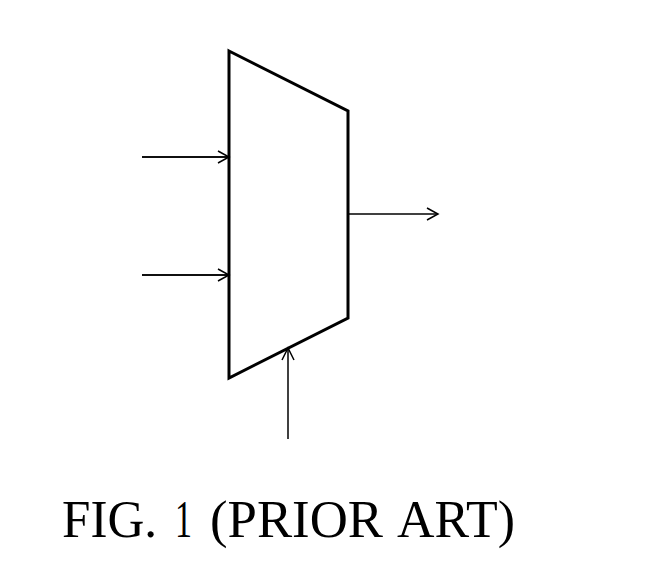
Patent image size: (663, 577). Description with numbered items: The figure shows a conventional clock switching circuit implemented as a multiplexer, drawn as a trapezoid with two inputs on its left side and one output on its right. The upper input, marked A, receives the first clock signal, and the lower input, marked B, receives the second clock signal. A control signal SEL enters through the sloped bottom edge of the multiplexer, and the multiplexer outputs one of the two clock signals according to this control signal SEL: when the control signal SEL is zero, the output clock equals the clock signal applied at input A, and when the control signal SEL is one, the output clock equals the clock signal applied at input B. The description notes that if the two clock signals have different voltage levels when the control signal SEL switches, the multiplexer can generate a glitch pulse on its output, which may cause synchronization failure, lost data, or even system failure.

The multiplexer input A is at (200, 157).
The multiplexer input B is at (199, 275).
The control signal SEL is at (289, 386).